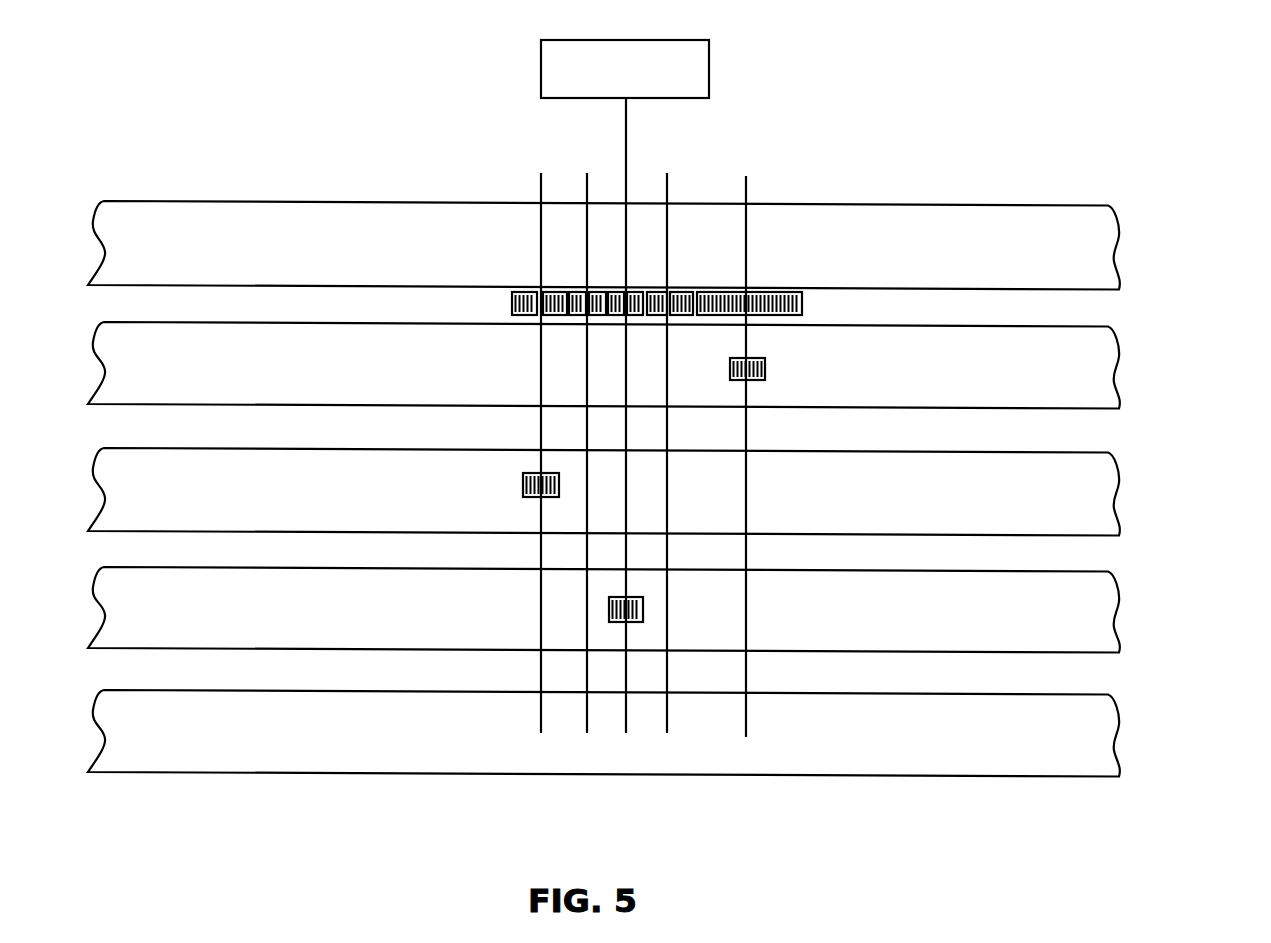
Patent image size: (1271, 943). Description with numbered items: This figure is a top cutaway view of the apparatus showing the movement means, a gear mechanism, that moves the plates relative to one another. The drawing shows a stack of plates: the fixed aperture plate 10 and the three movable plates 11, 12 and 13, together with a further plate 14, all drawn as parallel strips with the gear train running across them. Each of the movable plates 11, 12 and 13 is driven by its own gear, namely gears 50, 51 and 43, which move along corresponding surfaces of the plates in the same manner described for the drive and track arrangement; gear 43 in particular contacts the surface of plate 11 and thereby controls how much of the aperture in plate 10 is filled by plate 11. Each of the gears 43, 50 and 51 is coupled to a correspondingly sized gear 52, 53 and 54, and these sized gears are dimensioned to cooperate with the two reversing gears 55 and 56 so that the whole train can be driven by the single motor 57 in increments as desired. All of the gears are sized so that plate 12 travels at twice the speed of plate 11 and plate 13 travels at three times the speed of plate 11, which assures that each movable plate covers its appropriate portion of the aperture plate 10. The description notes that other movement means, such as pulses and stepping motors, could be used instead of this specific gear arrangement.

The aperture plate 10 is at (1093, 260).
The movable plate 11 is at (1093, 380).
The movable plate 12 is at (1093, 506).
The movable plate 13 is at (1093, 626).
The fifth track 14 is at (1093, 748).
The gear 43 is at (765, 367).
The gear 50 is at (523, 482).
The gear 51 is at (643, 608).
The sized gear 52 is at (802, 304).
The sized gear 53 is at (633, 292).
The sized gear 54 is at (512, 300).
The reversing gear 55 is at (575, 292).
The reversing gear 56 is at (685, 292).
The motor 57 is at (709, 78).